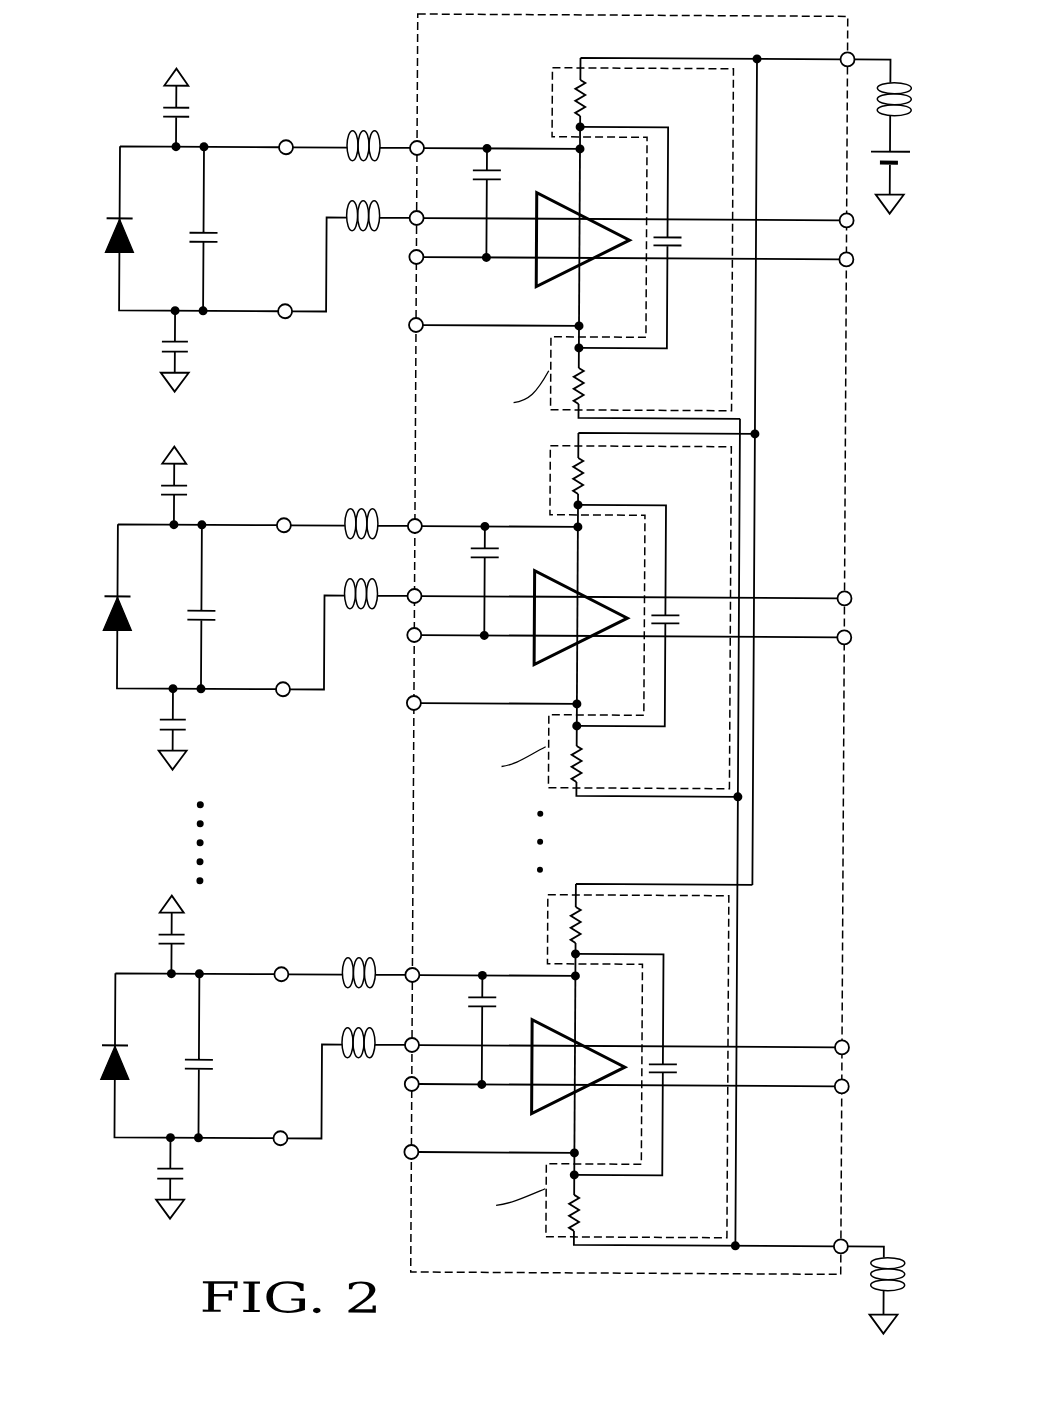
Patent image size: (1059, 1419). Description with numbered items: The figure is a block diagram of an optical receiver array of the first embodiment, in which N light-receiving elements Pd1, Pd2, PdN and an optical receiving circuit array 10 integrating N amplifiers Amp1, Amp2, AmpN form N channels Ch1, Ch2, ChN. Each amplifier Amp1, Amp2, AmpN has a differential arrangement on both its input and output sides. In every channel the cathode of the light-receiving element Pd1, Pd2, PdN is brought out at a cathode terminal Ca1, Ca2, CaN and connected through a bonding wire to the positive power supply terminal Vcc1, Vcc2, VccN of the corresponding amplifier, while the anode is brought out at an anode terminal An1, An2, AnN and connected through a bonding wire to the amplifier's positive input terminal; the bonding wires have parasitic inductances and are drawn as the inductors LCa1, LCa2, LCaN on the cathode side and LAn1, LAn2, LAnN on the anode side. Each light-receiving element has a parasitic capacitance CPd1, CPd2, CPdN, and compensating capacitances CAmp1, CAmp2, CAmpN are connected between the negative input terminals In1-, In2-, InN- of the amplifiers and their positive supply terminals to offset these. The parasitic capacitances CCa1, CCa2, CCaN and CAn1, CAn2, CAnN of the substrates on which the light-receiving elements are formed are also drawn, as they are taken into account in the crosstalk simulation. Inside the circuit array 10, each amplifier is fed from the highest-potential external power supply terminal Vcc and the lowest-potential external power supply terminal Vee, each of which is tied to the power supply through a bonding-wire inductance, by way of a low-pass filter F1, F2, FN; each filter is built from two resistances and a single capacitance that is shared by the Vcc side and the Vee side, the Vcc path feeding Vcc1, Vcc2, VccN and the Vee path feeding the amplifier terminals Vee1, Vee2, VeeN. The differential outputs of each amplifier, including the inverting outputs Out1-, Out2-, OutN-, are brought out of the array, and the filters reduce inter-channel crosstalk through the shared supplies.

The optical receiving circuit array 10 is at (417, 37).
The channel Ch1 is at (103, 152).
The channel Ch2 is at (235, 558).
The channel ChN is at (231, 988).
The light-receiving element Pd1 is at (132, 219).
The light-receiving element Pd2 is at (130, 597).
The light-receiving element PdN is at (129, 1046).
The parasitic capacitance CCa1 is at (151, 107).
The parasitic capacitance CCa2 is at (149, 485).
The parasitic capacitance CCaN is at (144, 934).
The parasitic capacitance CPd1 is at (229, 229).
The parasitic capacitance CPd2 is at (227, 607).
The parasitic capacitance CPdN is at (225, 1056).
The parasitic capacitance CAn1 is at (148, 350).
The parasitic capacitance CAn2 is at (146, 728).
The parasitic capacitance CAnN is at (142, 1177).
The cathode terminal of channel 1 Ca1 is at (268, 133).
The cathode terminal of channel 2 Ca2 is at (266, 511).
The cathode terminal of channel N CaN is at (261, 960).
The anode terminal of channel 1 An1 is at (265, 300).
The anode terminal of channel 2 An2 is at (263, 678).
The anode terminal of channel N AnN is at (258, 1127).
The cathode bonding-wire inductance of channel 1 LCa1 is at (362, 129).
The cathode bonding-wire inductance of channel 2 LCa2 is at (360, 507).
The cathode bonding-wire inductance of channel N LCaN is at (354, 956).
The anode bonding-wire inductance of channel 1 LAn1 is at (366, 235).
The anode bonding-wire inductance of channel 2 LAn2 is at (364, 613).
The anode bonding-wire inductance of channel N LAnN is at (361, 1062).
The positive power supply terminal Vcc1 is at (495, 131).
The positive power supply terminal Vcc2 is at (493, 511).
The positive power supply terminal VccN is at (490, 963).
The negative input terminal In1- is at (624, 273).
The negative input terminal In2- is at (622, 651).
The negative input terminal InN- is at (620, 1100).
The power supply terminal Vee1 is at (494, 313).
The power supply terminal Vee2 is at (492, 691).
The power supply terminal VeeN is at (489, 1140).
The capacitance CAmp1 is at (521, 203).
The capacitance CAmp2 is at (519, 581).
The capacitance CAmpN is at (518, 1030).
The amplifier Amp1 is at (583, 238).
The amplifier Amp2 is at (581, 616).
The amplifier AmpN is at (578, 1065).
The low-pass filter F1 is at (577, 265).
The low-pass filter F2 is at (575, 638).
The low-pass filter FN is at (571, 1080).
The inverting output terminal of channel 1 Out1- is at (821, 275).
The inverting output terminal of channel 2 Out2- is at (819, 653).
The inverting output terminal of channel N OutN- is at (815, 1102).
The highest-potential power supply terminal Vcc is at (859, 119).
The lowest-potential power supply terminal Vee is at (846, 1274).